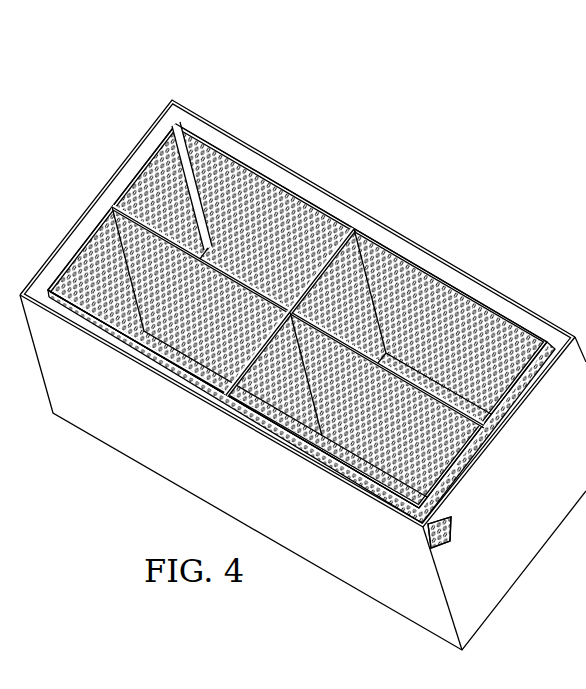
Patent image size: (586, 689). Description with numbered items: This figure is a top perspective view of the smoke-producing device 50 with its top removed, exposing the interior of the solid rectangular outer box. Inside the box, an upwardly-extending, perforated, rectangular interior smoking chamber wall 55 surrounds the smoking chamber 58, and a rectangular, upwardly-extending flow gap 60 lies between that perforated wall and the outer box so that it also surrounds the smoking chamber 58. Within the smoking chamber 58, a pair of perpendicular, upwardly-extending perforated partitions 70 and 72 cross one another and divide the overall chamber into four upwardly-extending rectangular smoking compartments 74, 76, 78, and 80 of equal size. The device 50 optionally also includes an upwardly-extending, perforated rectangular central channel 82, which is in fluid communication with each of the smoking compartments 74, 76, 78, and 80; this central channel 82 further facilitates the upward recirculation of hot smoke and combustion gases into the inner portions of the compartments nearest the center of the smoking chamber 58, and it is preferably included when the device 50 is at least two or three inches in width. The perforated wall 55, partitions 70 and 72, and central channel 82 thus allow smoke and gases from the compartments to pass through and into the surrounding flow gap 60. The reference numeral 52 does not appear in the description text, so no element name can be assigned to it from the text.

The smoke-producing device 50 is at (522, 57).
The perforated tray 52 is at (448, 303).
The interior smoking chamber wall 55 is at (147, 157).
The smoking chamber 58 is at (294, 214).
The flow gap 60 is at (212, 128).
The perforated partition 70 is at (357, 232).
The perforated partition 72 is at (100, 226).
The smoking compartment 74 is at (253, 180).
The smoking compartment 76 is at (515, 330).
The smoking compartment 78 is at (343, 423).
The smoking compartment 80 is at (230, 350).
The central channel 82 is at (343, 340).